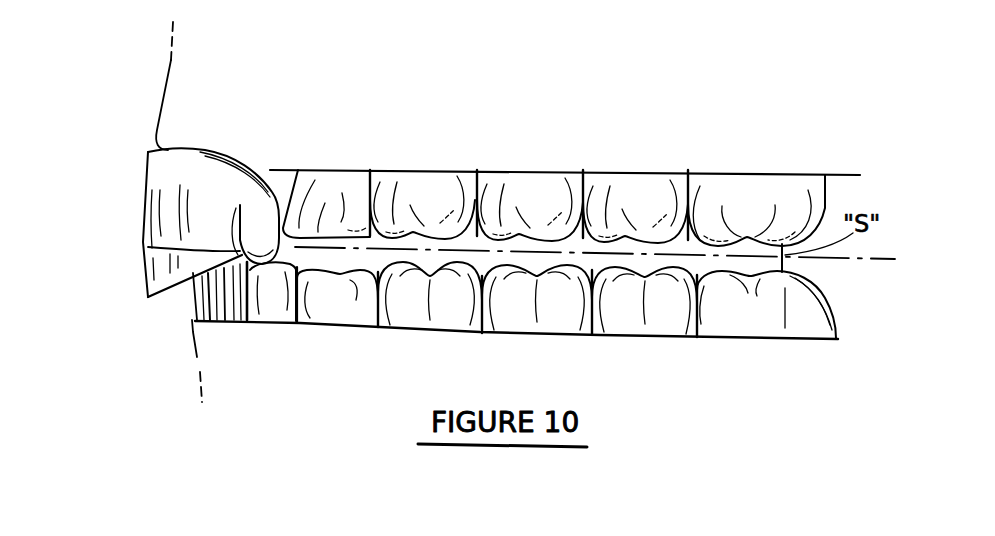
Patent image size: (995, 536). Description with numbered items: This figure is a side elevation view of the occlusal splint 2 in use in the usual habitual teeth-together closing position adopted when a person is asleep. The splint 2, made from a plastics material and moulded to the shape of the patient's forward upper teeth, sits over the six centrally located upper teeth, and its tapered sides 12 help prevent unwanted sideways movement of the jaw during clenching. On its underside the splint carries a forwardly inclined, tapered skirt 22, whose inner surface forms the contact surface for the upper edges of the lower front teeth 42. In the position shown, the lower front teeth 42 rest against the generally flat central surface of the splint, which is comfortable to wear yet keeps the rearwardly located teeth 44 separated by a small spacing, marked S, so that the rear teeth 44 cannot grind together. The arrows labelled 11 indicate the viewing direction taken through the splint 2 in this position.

The occlusal splint 2 is at (118, 206).
The direction of force arrows 11 is at (212, 135).
The sides of the splint 12 is at (251, 220).
The skirt 22 is at (150, 272).
The lower front teeth 42 is at (208, 336).
The rearwardly located teeth 44 is at (827, 208).